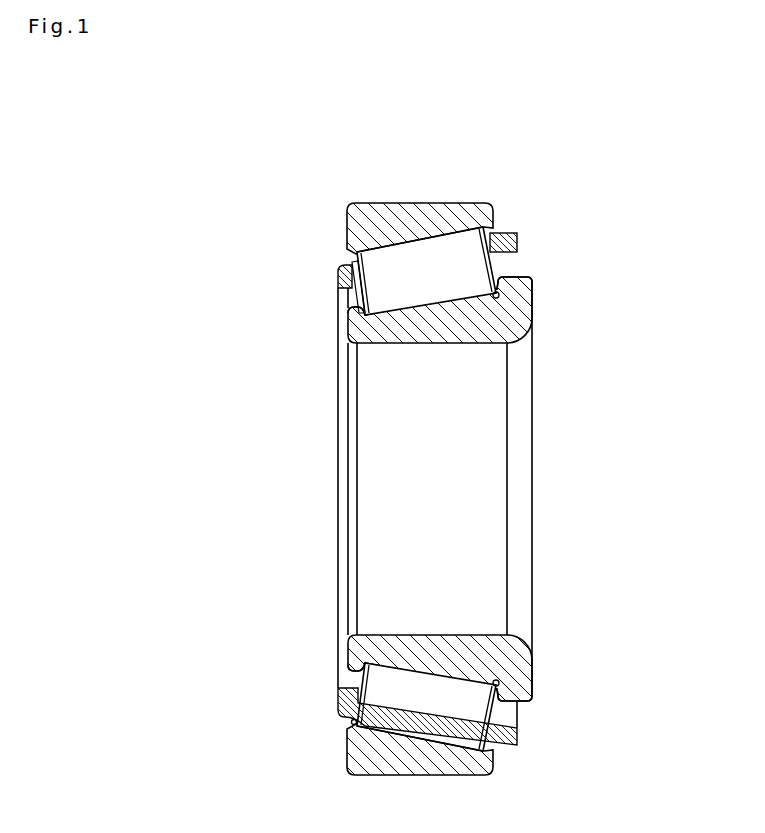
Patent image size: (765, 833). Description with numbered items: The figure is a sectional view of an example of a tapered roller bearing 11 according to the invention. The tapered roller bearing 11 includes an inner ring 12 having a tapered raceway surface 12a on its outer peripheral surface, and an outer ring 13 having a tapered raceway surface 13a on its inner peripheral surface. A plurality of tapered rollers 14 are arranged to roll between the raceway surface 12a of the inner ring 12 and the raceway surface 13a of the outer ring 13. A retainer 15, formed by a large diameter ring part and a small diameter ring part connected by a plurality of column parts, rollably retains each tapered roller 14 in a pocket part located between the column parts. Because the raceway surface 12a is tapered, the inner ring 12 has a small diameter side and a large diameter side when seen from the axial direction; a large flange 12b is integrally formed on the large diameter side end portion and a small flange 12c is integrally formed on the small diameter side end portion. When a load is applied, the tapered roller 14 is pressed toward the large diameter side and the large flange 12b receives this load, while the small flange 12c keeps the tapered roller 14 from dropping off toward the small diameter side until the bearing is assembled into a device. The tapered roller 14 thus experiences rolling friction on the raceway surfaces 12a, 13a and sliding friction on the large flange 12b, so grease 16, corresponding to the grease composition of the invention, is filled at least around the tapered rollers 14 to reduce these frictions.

The tapered roller bearing 11 is at (430, 458).
The inner ring 12 is at (430, 483).
The raceway surface 12a is at (375, 318).
The large flange 12b is at (536, 291).
The small flange 12c is at (348, 309).
The outer ring 13 is at (419, 446).
The raceway surface 13a is at (420, 252).
The tapered roller 14 is at (347, 232).
The retainer 15 is at (342, 274).
The grease 16 is at (503, 262).